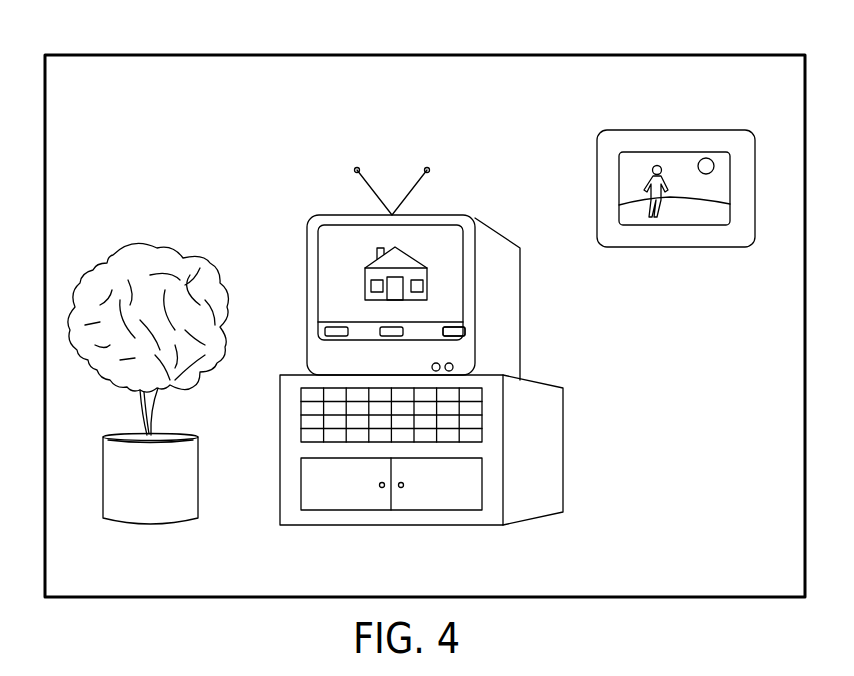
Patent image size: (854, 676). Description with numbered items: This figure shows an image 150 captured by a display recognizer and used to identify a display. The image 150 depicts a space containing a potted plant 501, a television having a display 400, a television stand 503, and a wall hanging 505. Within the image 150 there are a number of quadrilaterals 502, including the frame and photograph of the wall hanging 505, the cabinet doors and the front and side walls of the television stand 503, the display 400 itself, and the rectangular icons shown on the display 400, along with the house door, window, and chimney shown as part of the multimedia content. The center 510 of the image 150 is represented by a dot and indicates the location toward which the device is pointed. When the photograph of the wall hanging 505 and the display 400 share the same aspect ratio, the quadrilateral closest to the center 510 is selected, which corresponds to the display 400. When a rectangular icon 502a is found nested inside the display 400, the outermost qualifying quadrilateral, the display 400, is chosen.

The image 150 is at (652, 53).
The display 400 is at (440, 223).
The potted plant 501 is at (188, 487).
The quadrilaterals 502 is at (337, 215).
The rectangular icon 502a is at (457, 328).
The television stand 503 is at (533, 500).
The wall hanging 505 is at (697, 138).
The center 510 is at (447, 322).